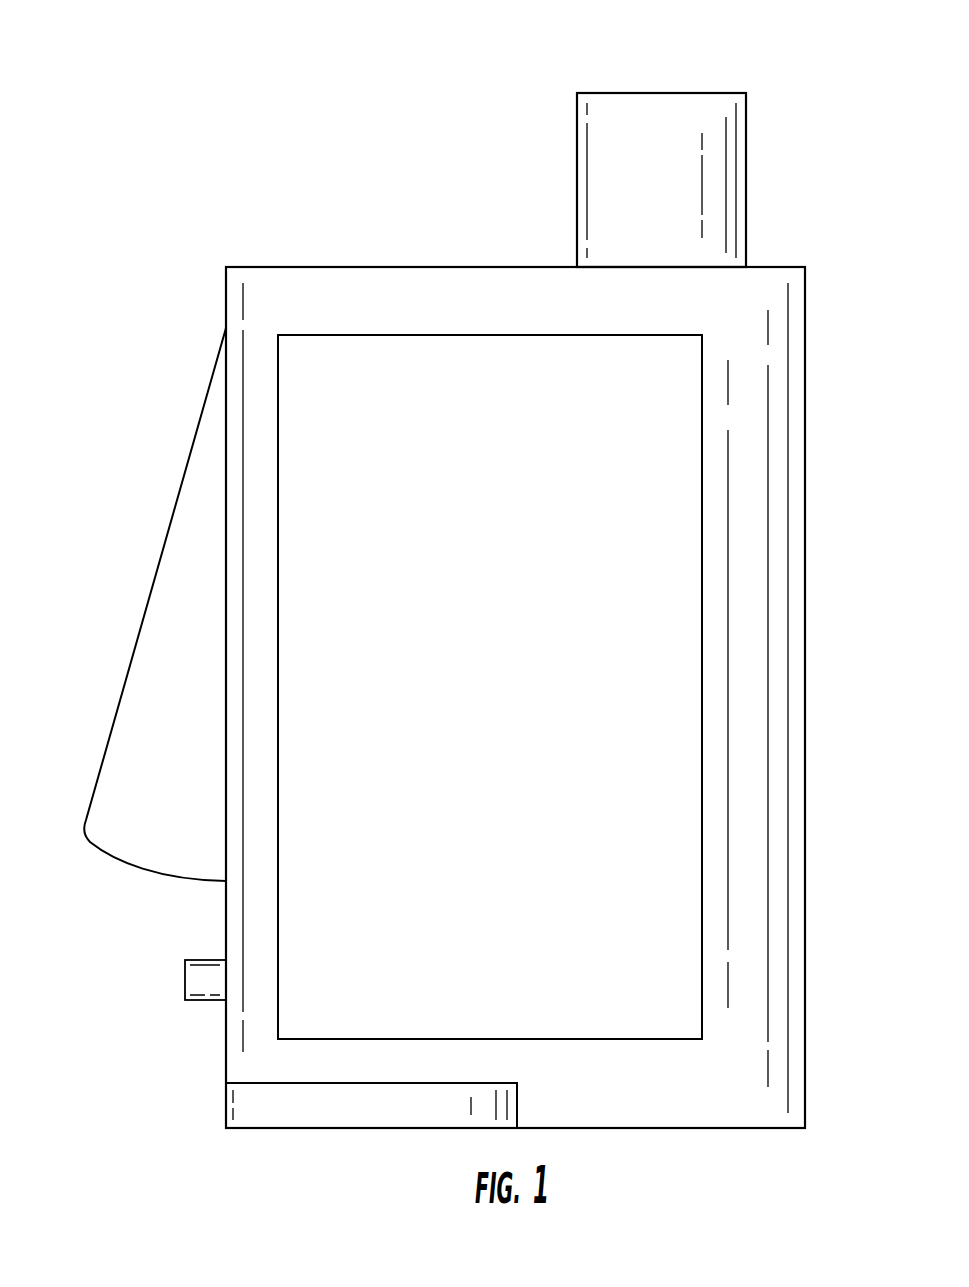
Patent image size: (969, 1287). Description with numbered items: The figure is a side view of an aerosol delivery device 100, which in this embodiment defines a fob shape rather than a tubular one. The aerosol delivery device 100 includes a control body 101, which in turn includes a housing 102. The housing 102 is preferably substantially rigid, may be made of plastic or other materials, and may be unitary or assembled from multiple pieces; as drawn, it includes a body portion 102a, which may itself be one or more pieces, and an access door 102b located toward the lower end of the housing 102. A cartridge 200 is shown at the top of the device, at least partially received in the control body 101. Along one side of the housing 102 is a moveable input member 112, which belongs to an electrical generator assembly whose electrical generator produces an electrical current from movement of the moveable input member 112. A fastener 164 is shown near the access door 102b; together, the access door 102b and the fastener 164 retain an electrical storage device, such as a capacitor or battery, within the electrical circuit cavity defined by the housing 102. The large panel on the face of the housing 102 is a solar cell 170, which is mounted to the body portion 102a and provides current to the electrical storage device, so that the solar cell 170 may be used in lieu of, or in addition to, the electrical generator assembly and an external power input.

The aerosol delivery device 100 is at (218, 102).
The control body 101 is at (185, 228).
The housing 102 is at (418, 262).
The body portion 102a is at (226, 928).
The access door 102b is at (226, 1100).
The moveable input member 112 is at (165, 527).
The fastener 164 is at (185, 970).
The solar cell 170 is at (702, 520).
The cartridge 200 is at (607, 72).